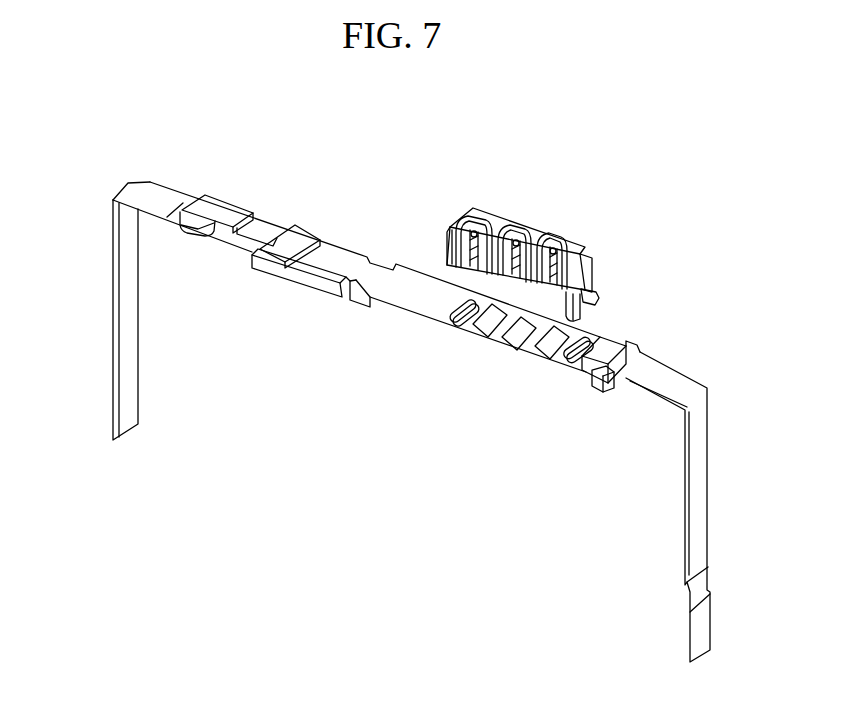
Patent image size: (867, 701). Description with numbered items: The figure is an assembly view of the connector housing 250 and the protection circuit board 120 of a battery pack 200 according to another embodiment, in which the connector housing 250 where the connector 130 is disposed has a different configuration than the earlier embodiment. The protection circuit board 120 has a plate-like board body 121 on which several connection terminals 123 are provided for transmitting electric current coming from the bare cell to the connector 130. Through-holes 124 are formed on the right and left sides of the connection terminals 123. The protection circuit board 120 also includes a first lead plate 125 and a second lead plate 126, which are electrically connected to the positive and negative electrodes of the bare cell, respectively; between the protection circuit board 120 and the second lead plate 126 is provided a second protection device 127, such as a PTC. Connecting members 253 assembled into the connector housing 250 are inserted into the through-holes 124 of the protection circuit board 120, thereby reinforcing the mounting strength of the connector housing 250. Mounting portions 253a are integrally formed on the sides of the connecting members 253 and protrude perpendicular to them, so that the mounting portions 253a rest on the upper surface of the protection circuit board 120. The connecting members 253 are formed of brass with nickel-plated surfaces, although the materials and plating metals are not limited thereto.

The battery pack 200 is at (112, 112).
The protection circuit board 120 is at (347, 244).
The board body 121 is at (385, 293).
The connection terminals 123 is at (517, 335).
The through-holes 124 is at (453, 320).
The first lead plate 125 is at (700, 479).
The second lead plate 126 is at (125, 335).
The second protection device 127 is at (202, 207).
The connector 130 is at (485, 209).
The connector housing 250 is at (541, 212).
The connecting members 253 is at (603, 304).
The mounting portions 253a is at (598, 292).